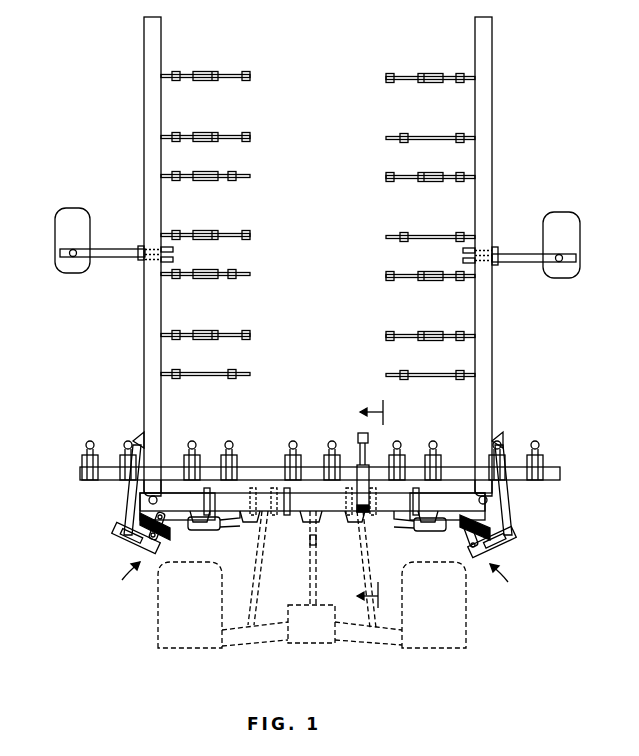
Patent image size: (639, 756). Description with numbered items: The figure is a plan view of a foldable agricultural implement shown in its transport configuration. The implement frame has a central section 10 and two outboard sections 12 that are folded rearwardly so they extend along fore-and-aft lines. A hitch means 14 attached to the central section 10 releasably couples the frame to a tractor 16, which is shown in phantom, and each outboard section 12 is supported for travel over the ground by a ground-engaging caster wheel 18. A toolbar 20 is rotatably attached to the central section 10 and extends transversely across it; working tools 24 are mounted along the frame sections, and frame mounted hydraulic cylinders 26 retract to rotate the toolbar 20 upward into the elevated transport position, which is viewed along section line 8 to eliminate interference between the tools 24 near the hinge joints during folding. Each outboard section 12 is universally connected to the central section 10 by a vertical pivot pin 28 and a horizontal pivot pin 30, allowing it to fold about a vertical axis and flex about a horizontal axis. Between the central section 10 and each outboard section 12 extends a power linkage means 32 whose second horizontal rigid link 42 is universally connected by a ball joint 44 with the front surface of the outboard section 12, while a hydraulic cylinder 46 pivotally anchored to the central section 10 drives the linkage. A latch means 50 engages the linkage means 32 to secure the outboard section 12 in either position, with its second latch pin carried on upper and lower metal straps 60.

The section line 8- 8 is at (357, 504).
The central section 10 is at (305, 513).
The outboard section 12 is at (145, 92).
The hitch means 14 is at (365, 530).
The tractor 16 is at (302, 640).
The caster wheel 18 is at (58, 222).
The toolbar 20 is at (247, 470).
The working tool 24 is at (250, 274).
The hydraulic cylinder 26 is at (358, 470).
The vertical pivot pin 28 is at (148, 500).
The horizontal pivot pin 30 is at (150, 493).
The power linkage means 32 is at (108, 539).
The second horizontal rigid link 42 is at (132, 512).
The ball joint 44 is at (134, 440).
The hydraulic cylinder 46 is at (200, 531).
The latch means 50 is at (314, 577).
The metal strap 60 is at (158, 537).